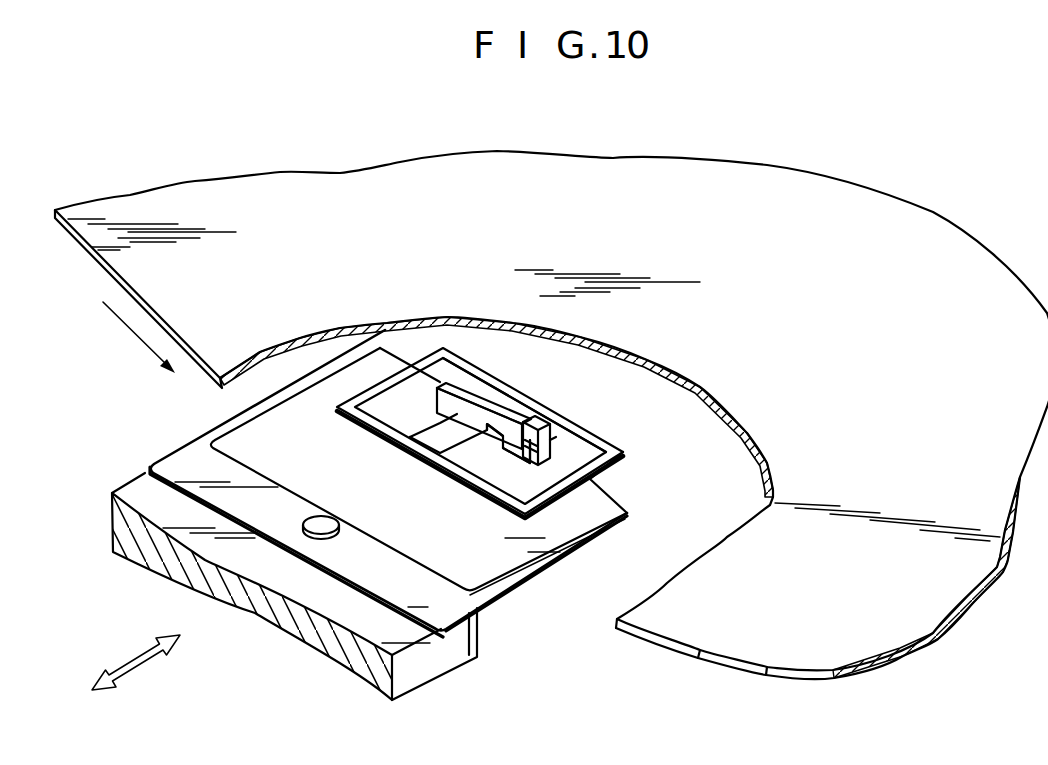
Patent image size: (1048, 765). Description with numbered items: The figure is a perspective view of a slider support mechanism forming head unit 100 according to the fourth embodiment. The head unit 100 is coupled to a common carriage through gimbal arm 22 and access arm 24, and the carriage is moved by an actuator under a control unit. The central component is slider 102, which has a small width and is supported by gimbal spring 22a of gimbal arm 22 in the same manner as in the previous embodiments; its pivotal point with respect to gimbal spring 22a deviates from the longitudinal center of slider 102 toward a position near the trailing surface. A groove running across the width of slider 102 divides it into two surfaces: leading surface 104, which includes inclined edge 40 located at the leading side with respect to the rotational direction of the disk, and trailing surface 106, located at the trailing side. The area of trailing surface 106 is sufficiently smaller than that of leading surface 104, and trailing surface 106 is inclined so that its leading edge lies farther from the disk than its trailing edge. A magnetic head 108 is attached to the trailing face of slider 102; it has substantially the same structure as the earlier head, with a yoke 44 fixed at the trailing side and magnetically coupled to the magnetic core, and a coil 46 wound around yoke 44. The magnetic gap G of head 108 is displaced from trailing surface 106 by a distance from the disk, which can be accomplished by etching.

The gimbal arm 22 is at (515, 585).
The gimbal spring 22a is at (627, 465).
The access arm 24 is at (427, 672).
The inclined edge 40 is at (463, 383).
The yoke 44 is at (530, 450).
The coil 46 is at (540, 430).
The head unit 100 is at (520, 398).
The slider 102 is at (457, 418).
The leading surface 104 is at (493, 400).
The trailing surface 106 is at (531, 415).
The magnetic head 108 is at (570, 446).
The magnetic gap G is at (562, 444).